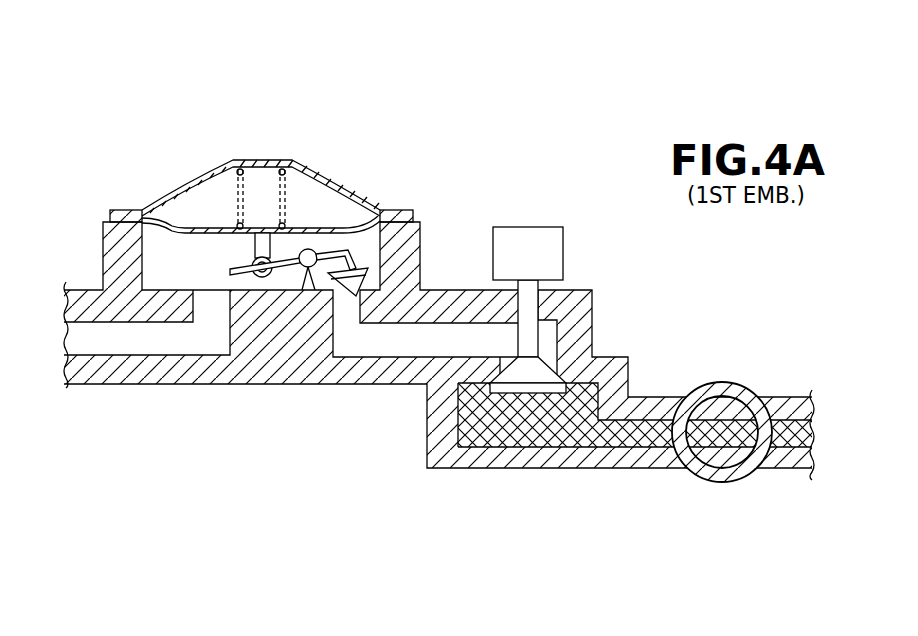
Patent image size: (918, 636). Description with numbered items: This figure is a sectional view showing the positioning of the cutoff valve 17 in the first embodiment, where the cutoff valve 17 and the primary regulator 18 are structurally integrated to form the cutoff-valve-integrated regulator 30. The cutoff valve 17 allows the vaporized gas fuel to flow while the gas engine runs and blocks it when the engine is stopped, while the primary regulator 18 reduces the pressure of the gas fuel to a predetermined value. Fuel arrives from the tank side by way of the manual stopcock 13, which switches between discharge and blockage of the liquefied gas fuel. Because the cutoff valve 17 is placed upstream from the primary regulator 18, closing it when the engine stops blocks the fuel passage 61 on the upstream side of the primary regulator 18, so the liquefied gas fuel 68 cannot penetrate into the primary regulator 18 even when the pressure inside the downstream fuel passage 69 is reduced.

The cutoff-valve-integrated regulator 30 is at (393, 117).
The primary regulator 18 is at (170, 180).
The fuel passage 61 is at (454, 326).
The cutoff valve 17 is at (532, 217).
The manual stopcock 13 is at (718, 388).
The fuel passage 69 is at (157, 355).
The liquefied gas fuel 68 is at (548, 440).